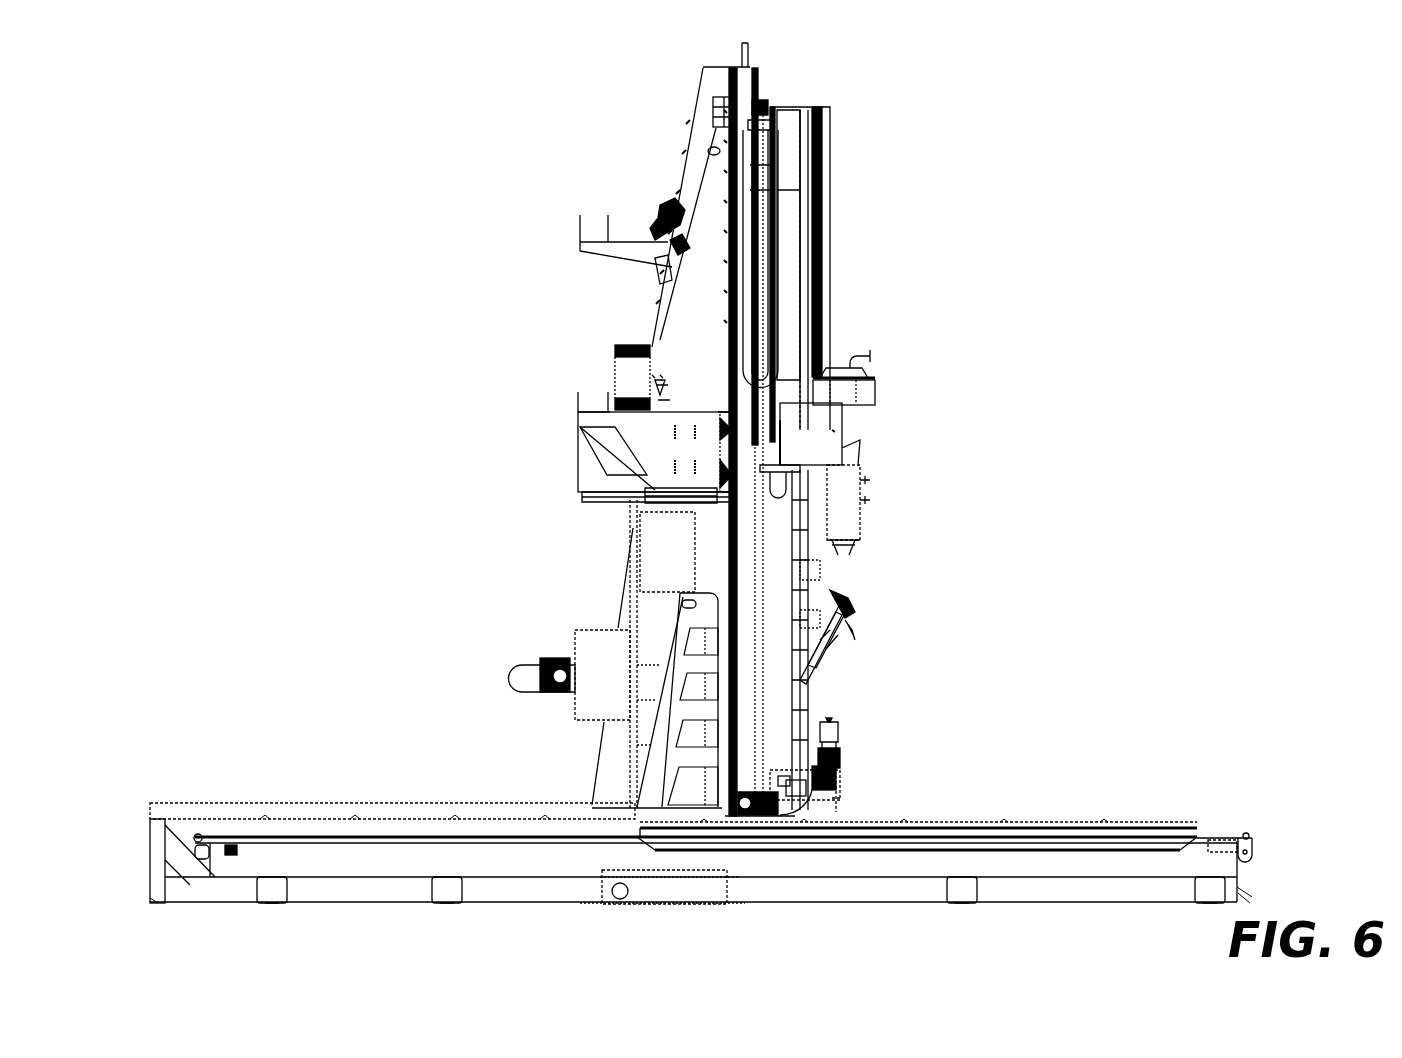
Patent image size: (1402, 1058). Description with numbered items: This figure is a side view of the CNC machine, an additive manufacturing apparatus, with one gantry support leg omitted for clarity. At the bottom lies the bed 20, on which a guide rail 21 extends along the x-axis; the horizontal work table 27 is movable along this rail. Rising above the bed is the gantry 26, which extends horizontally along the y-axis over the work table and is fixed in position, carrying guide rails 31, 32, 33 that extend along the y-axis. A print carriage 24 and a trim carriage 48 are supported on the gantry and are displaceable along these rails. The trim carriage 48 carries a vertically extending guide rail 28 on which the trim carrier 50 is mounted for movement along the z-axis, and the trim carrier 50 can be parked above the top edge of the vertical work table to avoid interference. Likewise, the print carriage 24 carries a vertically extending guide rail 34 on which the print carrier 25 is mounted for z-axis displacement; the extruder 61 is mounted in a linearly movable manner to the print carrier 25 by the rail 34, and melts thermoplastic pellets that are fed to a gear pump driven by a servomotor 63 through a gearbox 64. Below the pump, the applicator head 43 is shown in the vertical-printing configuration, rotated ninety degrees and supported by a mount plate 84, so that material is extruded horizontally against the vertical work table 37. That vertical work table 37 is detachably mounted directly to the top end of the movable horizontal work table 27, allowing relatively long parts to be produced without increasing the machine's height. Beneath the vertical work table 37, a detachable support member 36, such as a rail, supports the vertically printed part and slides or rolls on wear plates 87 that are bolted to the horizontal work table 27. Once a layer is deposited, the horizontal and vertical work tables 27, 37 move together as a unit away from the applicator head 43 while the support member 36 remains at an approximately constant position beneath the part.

The bed 20 is at (985, 862).
The guide rail 21 is at (275, 835).
The print carriage 24 is at (682, 313).
The print carrier 25 is at (752, 590).
The gantry 26 is at (610, 402).
The horizontal work table 27 is at (875, 820).
The guide rail 28 is at (557, 394).
The guide rail 31 is at (702, 445).
The guide rail 32 is at (717, 405).
The guide rail 33 is at (722, 475).
The guide rail 34 is at (760, 305).
The support member 36 is at (400, 810).
The vertical work table 37 is at (680, 660).
The applicator head 43 is at (745, 815).
The trim carriage 48 is at (690, 110).
The trim carrier 50 is at (825, 285).
The extruder 61 is at (820, 605).
The servomotor 63 is at (836, 742).
The gearbox 64 is at (838, 790).
The mount plate 84 is at (800, 790).
The wear plate 87 is at (1095, 822).